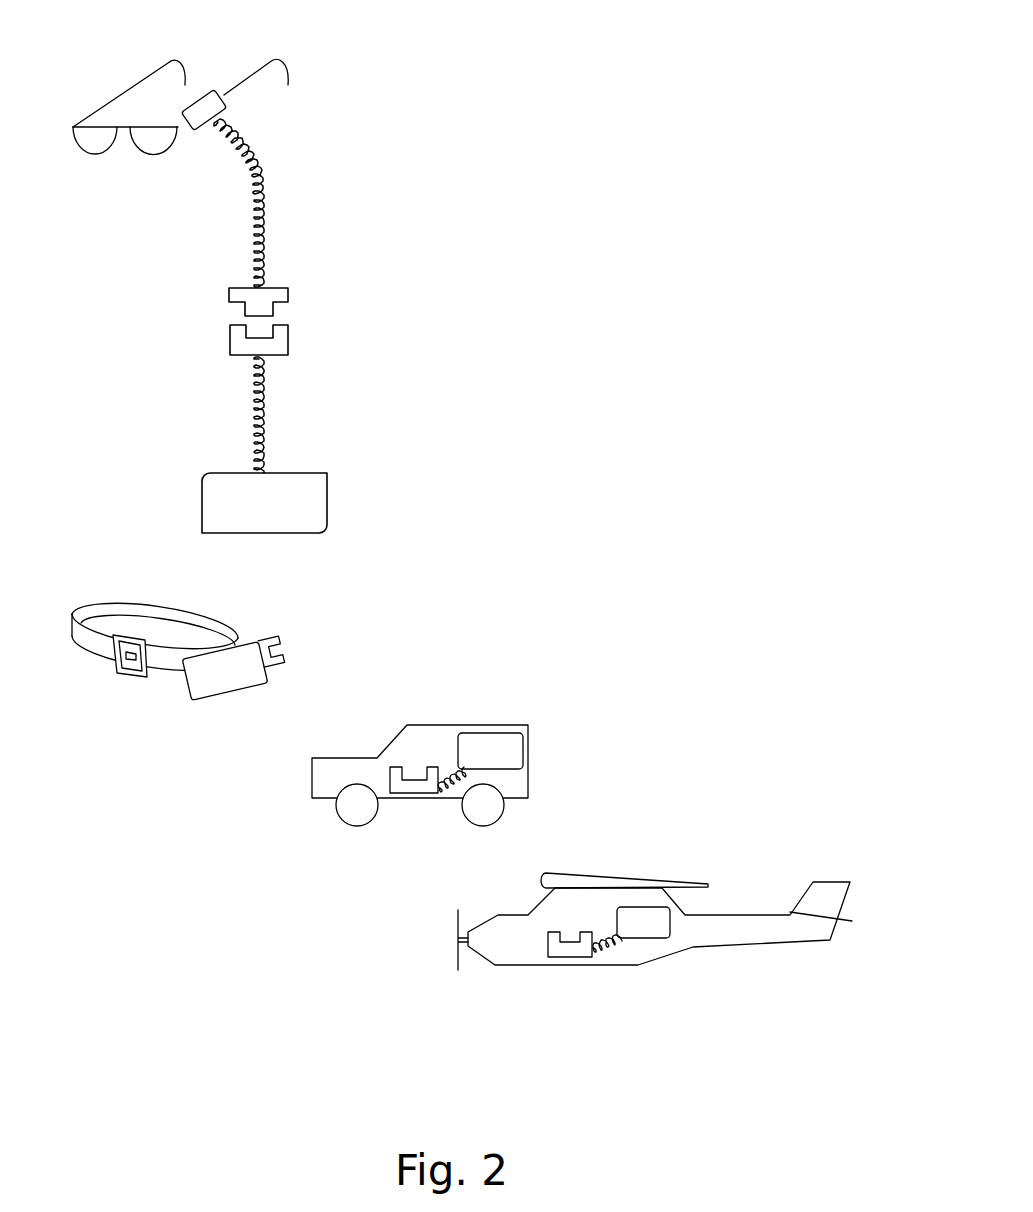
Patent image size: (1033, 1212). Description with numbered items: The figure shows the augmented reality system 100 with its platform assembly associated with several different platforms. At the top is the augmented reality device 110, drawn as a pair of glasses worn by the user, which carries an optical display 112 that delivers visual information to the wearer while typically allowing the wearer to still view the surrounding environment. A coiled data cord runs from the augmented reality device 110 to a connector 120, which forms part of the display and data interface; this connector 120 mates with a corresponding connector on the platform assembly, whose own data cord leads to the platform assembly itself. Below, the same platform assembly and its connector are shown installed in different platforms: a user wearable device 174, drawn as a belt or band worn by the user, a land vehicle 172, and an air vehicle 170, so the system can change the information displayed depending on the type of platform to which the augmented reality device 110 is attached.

The augmented reality system 100 is at (738, 80).
The augmented reality device 110 is at (205, 139).
The optical display 112 is at (75, 160).
The connector 120 is at (302, 292).
The air vehicle 170 is at (655, 949).
The land vehicle 172 is at (448, 789).
The user wearable device 174 is at (80, 648).